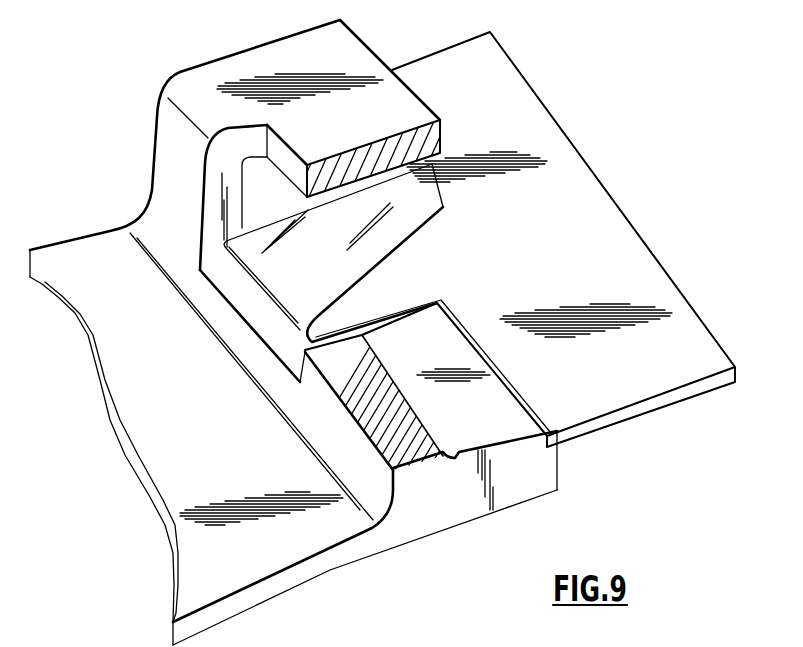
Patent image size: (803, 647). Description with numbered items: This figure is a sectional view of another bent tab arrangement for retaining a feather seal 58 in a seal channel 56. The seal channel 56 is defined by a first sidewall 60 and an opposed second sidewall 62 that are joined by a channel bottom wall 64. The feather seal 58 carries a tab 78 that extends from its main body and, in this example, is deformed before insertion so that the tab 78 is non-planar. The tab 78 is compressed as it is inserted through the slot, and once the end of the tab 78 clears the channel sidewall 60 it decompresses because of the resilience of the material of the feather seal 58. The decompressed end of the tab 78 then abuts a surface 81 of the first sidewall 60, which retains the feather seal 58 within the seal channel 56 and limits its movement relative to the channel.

The seal channel 56 is at (473, 443).
The feather seal 58 is at (652, 293).
The first sidewall 60 is at (347, 57).
The second sidewall 62 is at (530, 470).
The channel bottom wall 64 is at (180, 182).
The tab 78 is at (407, 208).
The surface of the channel sidewall 81 is at (278, 153).